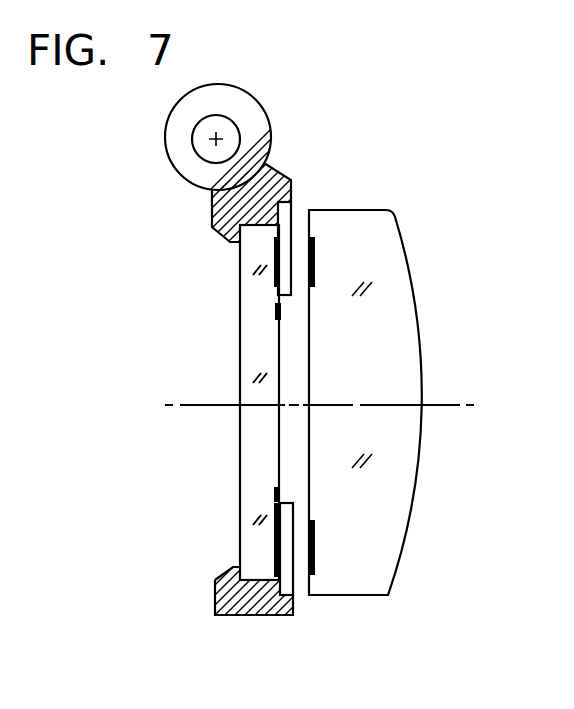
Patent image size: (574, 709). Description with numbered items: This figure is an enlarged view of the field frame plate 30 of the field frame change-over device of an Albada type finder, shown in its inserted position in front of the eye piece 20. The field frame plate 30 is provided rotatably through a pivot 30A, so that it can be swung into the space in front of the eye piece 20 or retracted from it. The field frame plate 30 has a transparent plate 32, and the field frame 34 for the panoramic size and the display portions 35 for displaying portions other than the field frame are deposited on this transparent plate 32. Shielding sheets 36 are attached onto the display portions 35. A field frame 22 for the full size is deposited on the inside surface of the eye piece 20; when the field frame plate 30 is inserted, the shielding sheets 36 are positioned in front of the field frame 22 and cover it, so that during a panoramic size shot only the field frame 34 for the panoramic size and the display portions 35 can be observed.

The eye piece 20 is at (374, 248).
The field frame for the full size 22 is at (316, 256).
The field frame plate 30 is at (262, 613).
The pivot 30A is at (192, 142).
The transparent plate 32 is at (266, 318).
The field frame for the panoramic size 34 is at (276, 306).
The display portions for displaying portions other than the field frame 35 is at (274, 247).
The shielding sheets 36 is at (296, 217).